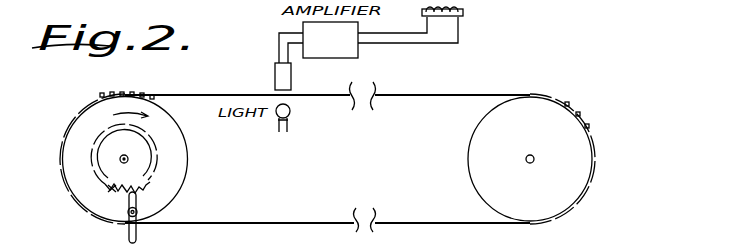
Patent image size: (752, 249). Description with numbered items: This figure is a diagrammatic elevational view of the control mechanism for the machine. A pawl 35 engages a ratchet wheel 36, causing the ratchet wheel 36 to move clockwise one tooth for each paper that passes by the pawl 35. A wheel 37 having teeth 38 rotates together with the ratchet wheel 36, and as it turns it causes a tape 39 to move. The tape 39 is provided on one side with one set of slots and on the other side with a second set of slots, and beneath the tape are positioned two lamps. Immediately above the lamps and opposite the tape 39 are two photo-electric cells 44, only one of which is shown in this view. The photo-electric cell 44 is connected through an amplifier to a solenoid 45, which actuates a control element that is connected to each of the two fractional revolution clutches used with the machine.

The pawl 35 is at (137, 240).
The ratchet wheel 36 is at (112, 190).
The wheel 37 is at (173, 168).
The teeth 38 is at (124, 144).
The tape 39 is at (275, 223).
The photo-electric cell 44 is at (283, 72).
The solenoid 45 is at (463, 13).